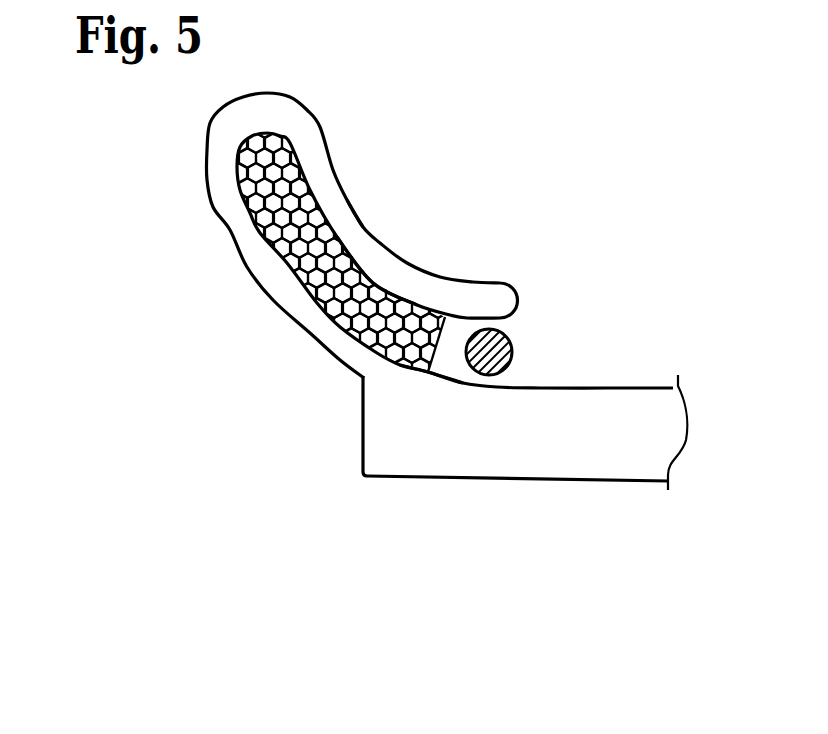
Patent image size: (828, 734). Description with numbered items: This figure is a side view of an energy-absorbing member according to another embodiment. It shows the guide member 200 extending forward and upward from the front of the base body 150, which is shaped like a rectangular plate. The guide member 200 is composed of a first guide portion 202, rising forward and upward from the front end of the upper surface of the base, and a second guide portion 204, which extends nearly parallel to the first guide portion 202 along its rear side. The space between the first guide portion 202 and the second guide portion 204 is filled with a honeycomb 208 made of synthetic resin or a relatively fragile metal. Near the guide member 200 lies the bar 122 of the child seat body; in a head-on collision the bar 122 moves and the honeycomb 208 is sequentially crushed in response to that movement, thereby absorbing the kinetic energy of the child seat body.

The guide member 200 is at (192, 151).
The first guide portion 202 is at (260, 252).
The second guide portion 204 is at (500, 300).
The honeycomb 208 is at (300, 222).
The bar 122 is at (512, 343).
The base body 150 is at (558, 443).